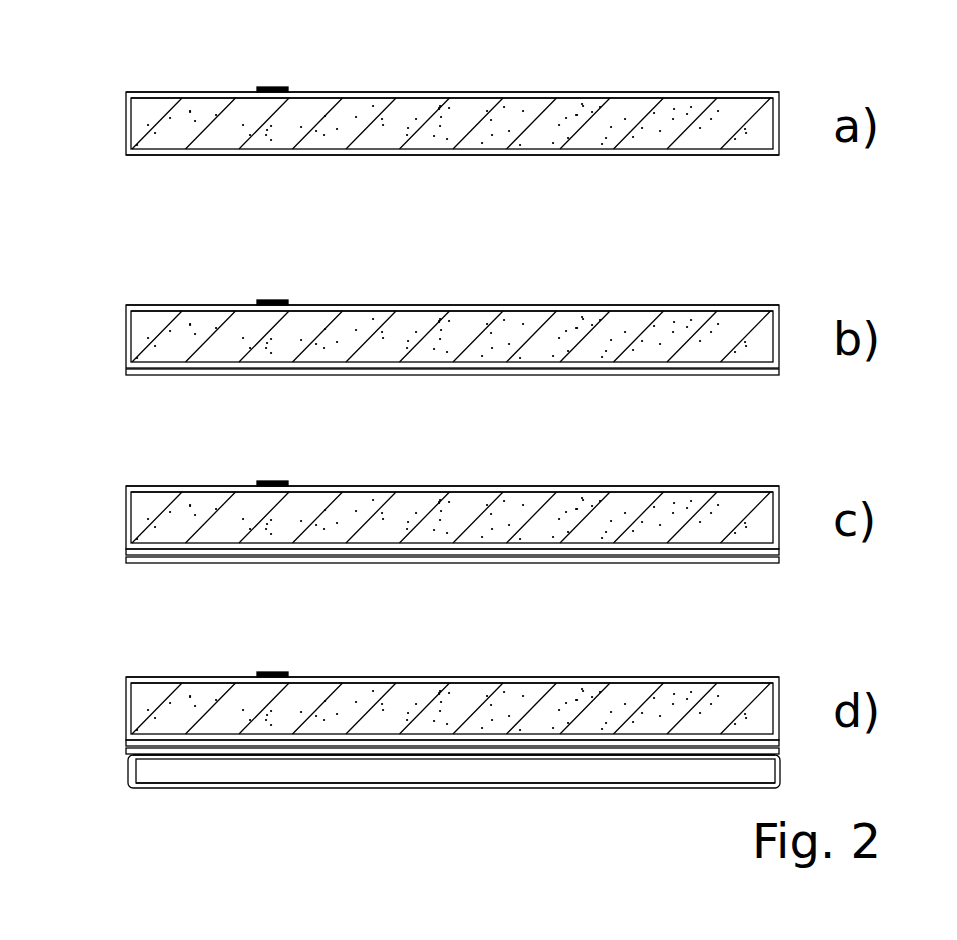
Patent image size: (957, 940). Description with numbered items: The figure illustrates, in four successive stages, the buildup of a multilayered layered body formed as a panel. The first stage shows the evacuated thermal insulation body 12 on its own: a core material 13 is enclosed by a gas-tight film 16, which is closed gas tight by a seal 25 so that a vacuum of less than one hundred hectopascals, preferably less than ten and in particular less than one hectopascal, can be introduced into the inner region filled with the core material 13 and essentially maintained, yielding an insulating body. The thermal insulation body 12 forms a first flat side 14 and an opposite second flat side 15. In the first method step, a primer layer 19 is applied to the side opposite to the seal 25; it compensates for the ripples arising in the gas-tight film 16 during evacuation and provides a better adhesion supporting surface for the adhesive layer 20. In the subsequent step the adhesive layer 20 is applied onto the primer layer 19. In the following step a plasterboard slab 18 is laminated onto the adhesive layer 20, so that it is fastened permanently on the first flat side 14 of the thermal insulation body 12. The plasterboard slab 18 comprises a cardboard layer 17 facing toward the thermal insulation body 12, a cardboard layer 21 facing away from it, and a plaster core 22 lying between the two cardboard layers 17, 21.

The thermal insulation body 12 is at (413, 381).
The core material 13 is at (494, 382).
The first flat side 14 is at (351, 155).
The second flat side 15 is at (452, 350).
The gas-tight film 16 is at (452, 347).
The cardboard layer 17 is at (498, 755).
The plasterboard slab 18 is at (111, 811).
The primer layer 19 is at (414, 526).
The adhesive layer 20 is at (414, 679).
The cardboard layer 21 is at (228, 787).
The plaster core 22 is at (296, 772).
The seal 25 is at (242, 347).